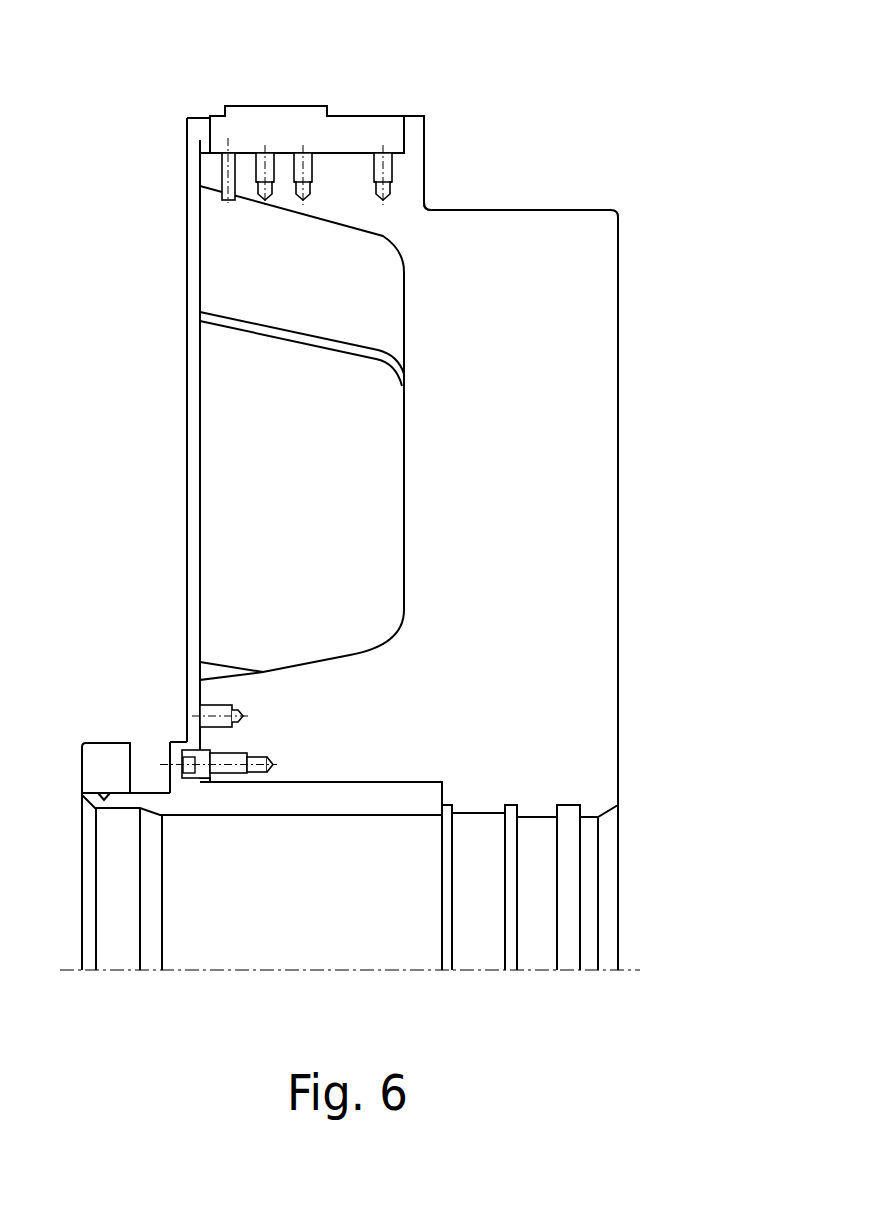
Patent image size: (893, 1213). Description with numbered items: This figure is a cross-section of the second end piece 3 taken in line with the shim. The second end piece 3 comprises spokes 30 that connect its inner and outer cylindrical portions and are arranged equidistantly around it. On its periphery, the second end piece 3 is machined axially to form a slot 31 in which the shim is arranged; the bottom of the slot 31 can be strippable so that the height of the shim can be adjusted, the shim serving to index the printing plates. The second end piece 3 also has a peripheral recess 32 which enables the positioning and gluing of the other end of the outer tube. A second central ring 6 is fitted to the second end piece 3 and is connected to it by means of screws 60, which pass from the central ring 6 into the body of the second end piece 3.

The second end piece 3 is at (467, 485).
The spokes 30 is at (593, 483).
The slot 31 is at (345, 138).
The peripheral recess 32 is at (471, 184).
The second central ring 6 is at (257, 797).
The screws 60 is at (220, 758).